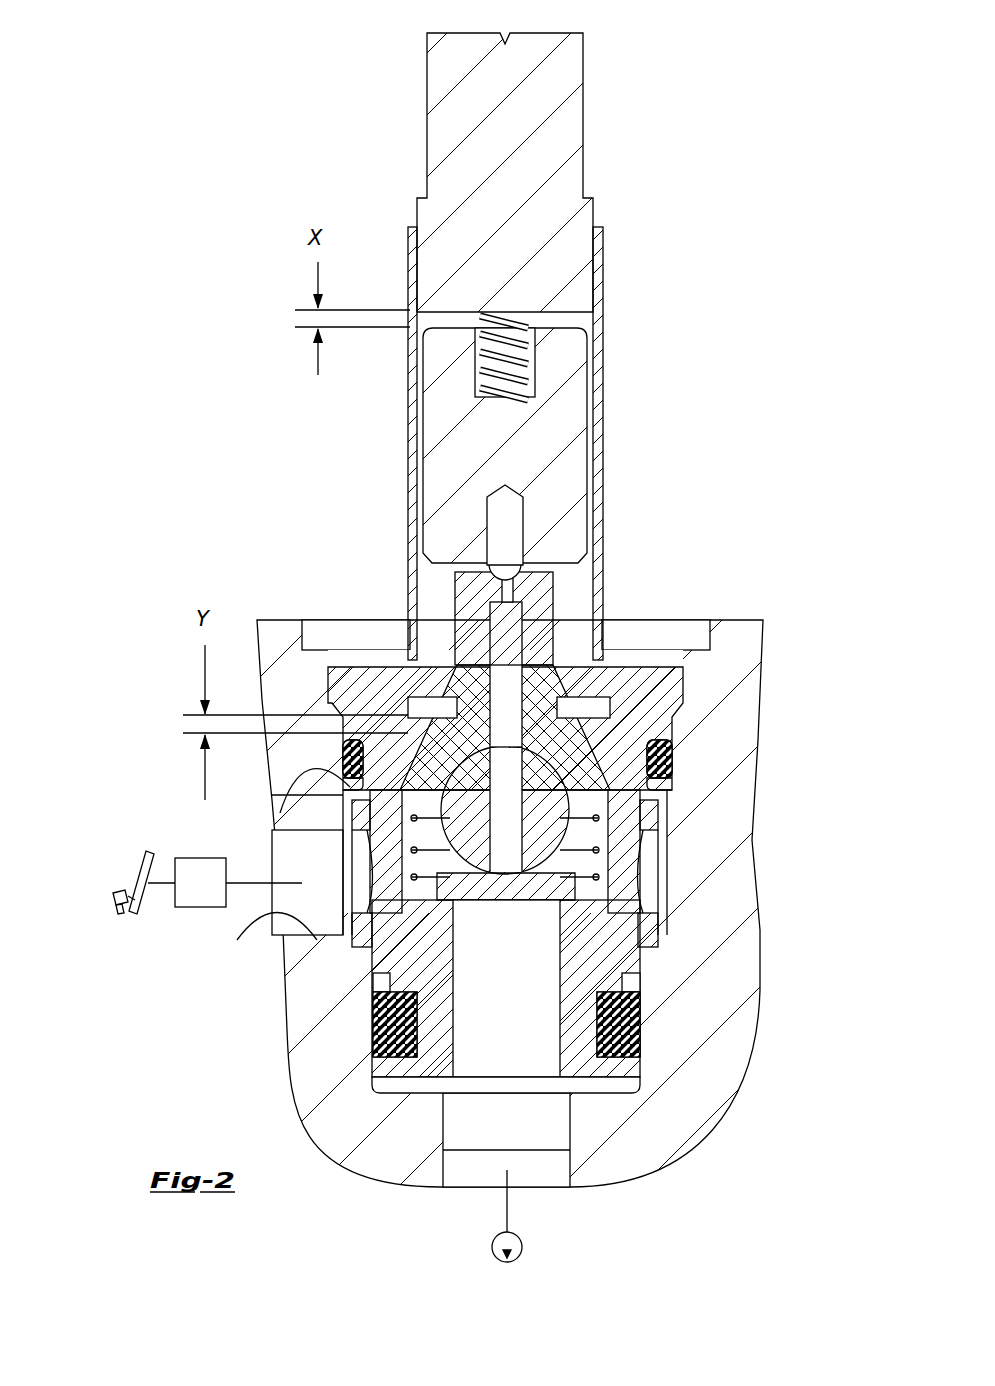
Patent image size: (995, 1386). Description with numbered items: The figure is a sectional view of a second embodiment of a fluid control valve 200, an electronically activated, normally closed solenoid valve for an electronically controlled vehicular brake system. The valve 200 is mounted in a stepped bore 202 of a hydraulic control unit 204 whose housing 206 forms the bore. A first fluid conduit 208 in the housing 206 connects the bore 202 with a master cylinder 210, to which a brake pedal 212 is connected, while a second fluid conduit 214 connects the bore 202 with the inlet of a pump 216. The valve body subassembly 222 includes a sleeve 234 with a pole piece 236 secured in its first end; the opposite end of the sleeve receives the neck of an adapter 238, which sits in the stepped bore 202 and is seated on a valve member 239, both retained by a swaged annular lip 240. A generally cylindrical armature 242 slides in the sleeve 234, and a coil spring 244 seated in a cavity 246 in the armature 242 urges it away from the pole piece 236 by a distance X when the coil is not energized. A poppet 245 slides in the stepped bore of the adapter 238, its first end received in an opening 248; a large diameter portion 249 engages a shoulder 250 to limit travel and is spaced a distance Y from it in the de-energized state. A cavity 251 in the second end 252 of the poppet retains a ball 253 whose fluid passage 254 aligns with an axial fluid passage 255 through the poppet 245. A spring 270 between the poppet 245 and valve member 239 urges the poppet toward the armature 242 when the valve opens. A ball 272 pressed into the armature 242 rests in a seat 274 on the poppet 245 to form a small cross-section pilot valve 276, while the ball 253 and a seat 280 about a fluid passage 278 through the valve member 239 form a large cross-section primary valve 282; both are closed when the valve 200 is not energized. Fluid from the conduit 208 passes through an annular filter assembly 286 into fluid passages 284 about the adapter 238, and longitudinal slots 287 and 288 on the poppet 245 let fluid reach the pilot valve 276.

The control valve 200 is at (702, 387).
The stepped bore 202 is at (665, 830).
The hydraulic control unit 204 is at (698, 1150).
The housing 206 is at (720, 1083).
The first fluid conduit 208 is at (275, 915).
The master cylinder 210 is at (190, 865).
The brake pedal 212 is at (110, 900).
The second fluid conduit 214 is at (528, 1193).
The pump 216 is at (492, 1240).
The valve body subassembly 222 is at (605, 505).
The sleeve 234 is at (598, 250).
The pole piece 236 is at (568, 136).
The adapter 238 is at (665, 730).
The valve member 239 is at (640, 967).
The annular lip 240 is at (735, 640).
The armature 242 is at (565, 447).
The spring 244 is at (480, 385).
The poppet 245 is at (455, 678).
The cavity 246 is at (528, 362).
The opening 248 is at (463, 600).
The large diameter portion 249 is at (332, 684).
The shoulder 250 is at (610, 708).
The cavity 251 is at (278, 780).
The second end 252 is at (598, 843).
The ball 253 is at (457, 830).
The fluid passage 254 is at (523, 780).
The axial fluid passage 255 is at (527, 640).
The spring 270 is at (598, 873).
The ball 272 is at (510, 560).
The seat 274 is at (560, 575).
The pilot valve 276 is at (433, 572).
The fluid passage 278 is at (560, 1002).
The seat 280 is at (555, 905).
The primary valve 282 is at (482, 880).
The fluid passages 284 is at (637, 947).
The annular filter assembly 286 is at (350, 943).
The longitudinal slot 287 is at (547, 640).
The longitudinal slot 288 is at (653, 793).